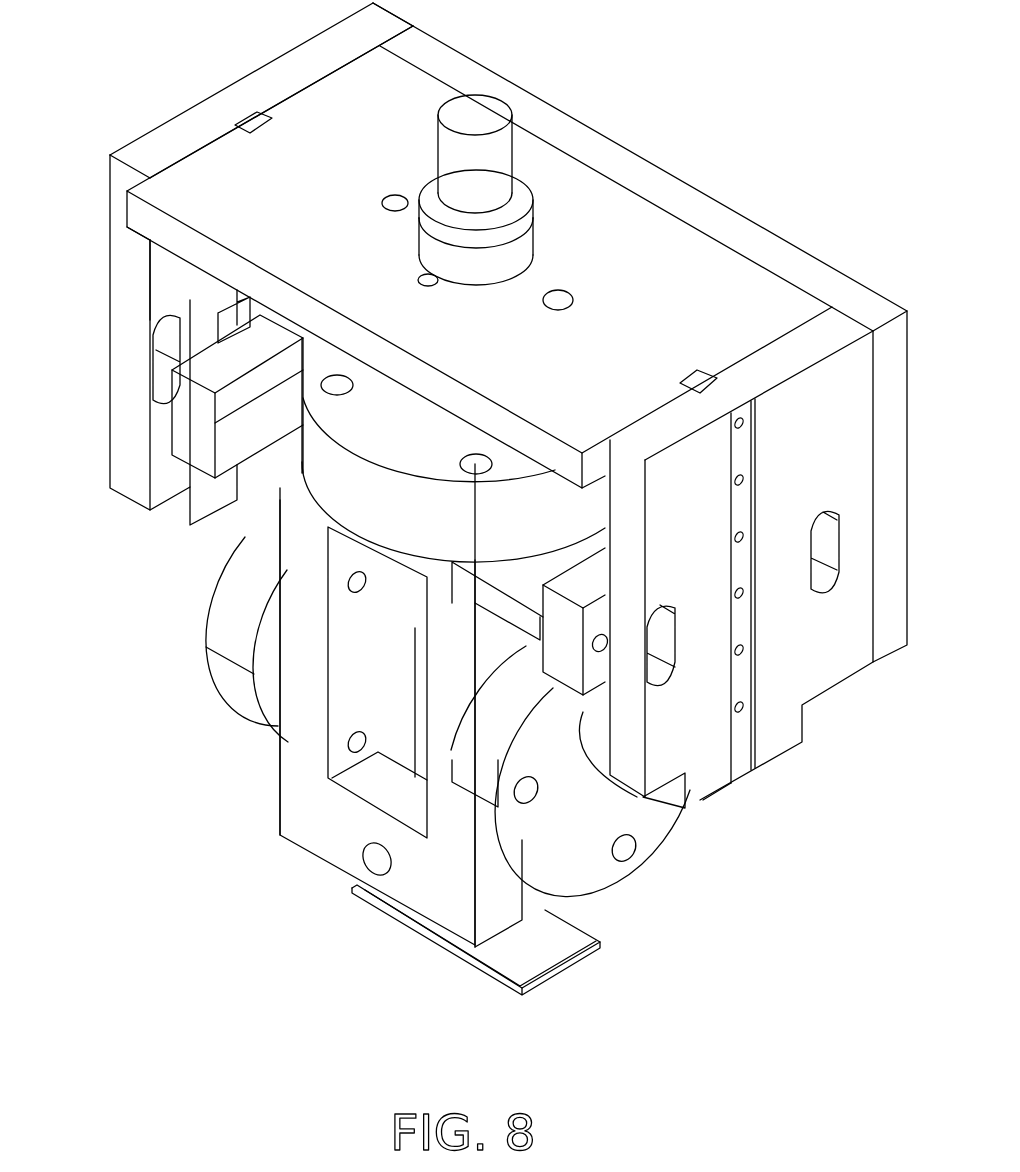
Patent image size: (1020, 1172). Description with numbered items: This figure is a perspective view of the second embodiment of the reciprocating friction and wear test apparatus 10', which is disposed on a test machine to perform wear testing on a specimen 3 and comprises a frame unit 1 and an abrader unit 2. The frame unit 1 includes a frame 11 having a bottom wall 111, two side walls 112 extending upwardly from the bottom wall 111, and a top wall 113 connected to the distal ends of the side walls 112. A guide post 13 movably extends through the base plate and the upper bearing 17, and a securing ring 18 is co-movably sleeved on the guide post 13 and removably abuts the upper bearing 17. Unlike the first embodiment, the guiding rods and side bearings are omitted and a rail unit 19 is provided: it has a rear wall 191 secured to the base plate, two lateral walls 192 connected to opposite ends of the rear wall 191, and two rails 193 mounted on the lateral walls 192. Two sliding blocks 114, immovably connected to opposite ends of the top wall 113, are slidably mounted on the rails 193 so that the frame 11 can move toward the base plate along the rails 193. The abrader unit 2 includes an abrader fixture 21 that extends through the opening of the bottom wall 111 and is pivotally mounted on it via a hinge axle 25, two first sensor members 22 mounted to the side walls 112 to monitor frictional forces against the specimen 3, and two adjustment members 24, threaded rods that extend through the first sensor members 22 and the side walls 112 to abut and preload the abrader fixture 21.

The frame unit 1 is at (265, 46).
The reciprocating friction and wear test apparatus 10' is at (606, 42).
The frame 11 is at (472, 943).
The bottom wall 111 is at (402, 917).
The side walls 112 is at (280, 767).
The top wall 113 is at (245, 408).
The sliding blocks 114 is at (183, 440).
The guide post 13 is at (490, 112).
The upper bearing 17 is at (528, 252).
The securing ring 18 is at (527, 217).
The rail unit 19 is at (858, 282).
The rear wall 191 is at (664, 168).
The lateral walls 192 is at (160, 127).
The rails 193 is at (237, 302).
The abrader unit 2 is at (658, 889).
The abrader fixture 21 is at (340, 797).
The first sensor members 22 is at (232, 568).
The adjustment members 24 is at (637, 797).
The hinge axle 25 is at (375, 860).
The specimen 3 is at (553, 962).